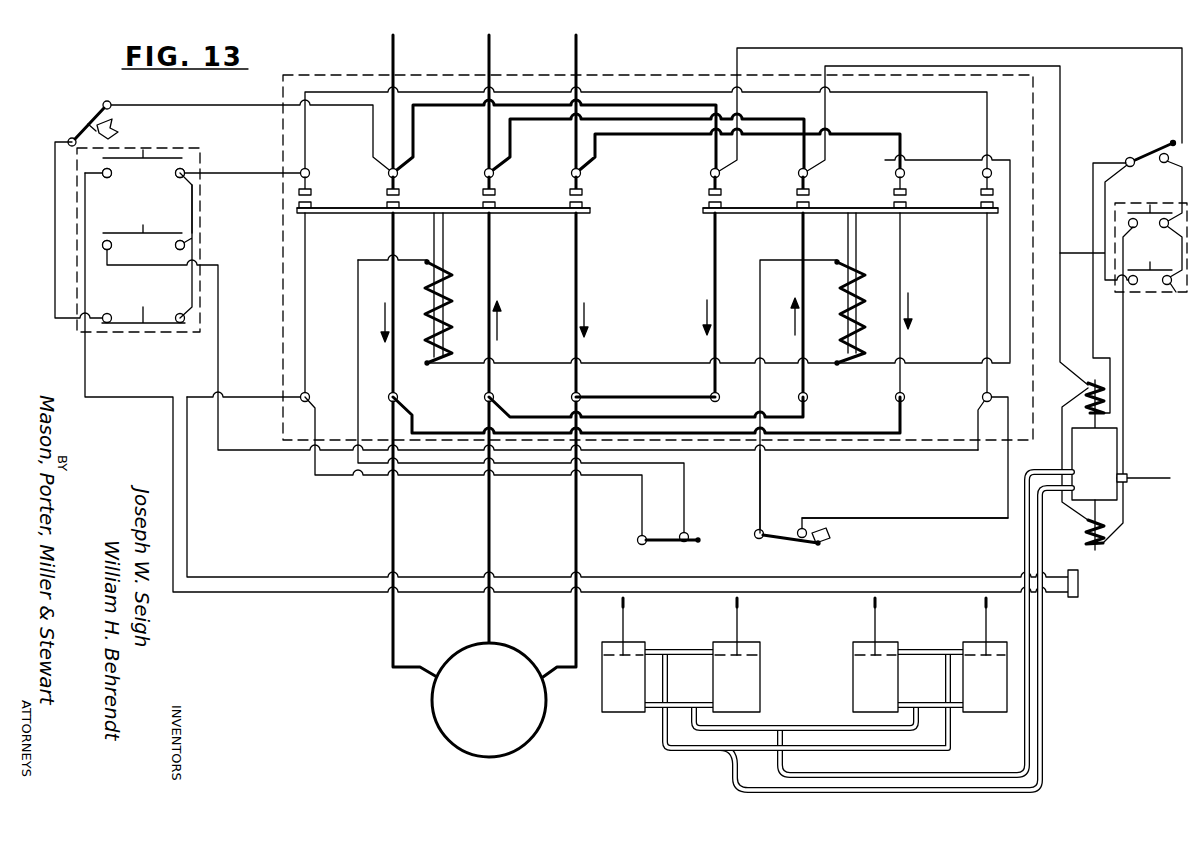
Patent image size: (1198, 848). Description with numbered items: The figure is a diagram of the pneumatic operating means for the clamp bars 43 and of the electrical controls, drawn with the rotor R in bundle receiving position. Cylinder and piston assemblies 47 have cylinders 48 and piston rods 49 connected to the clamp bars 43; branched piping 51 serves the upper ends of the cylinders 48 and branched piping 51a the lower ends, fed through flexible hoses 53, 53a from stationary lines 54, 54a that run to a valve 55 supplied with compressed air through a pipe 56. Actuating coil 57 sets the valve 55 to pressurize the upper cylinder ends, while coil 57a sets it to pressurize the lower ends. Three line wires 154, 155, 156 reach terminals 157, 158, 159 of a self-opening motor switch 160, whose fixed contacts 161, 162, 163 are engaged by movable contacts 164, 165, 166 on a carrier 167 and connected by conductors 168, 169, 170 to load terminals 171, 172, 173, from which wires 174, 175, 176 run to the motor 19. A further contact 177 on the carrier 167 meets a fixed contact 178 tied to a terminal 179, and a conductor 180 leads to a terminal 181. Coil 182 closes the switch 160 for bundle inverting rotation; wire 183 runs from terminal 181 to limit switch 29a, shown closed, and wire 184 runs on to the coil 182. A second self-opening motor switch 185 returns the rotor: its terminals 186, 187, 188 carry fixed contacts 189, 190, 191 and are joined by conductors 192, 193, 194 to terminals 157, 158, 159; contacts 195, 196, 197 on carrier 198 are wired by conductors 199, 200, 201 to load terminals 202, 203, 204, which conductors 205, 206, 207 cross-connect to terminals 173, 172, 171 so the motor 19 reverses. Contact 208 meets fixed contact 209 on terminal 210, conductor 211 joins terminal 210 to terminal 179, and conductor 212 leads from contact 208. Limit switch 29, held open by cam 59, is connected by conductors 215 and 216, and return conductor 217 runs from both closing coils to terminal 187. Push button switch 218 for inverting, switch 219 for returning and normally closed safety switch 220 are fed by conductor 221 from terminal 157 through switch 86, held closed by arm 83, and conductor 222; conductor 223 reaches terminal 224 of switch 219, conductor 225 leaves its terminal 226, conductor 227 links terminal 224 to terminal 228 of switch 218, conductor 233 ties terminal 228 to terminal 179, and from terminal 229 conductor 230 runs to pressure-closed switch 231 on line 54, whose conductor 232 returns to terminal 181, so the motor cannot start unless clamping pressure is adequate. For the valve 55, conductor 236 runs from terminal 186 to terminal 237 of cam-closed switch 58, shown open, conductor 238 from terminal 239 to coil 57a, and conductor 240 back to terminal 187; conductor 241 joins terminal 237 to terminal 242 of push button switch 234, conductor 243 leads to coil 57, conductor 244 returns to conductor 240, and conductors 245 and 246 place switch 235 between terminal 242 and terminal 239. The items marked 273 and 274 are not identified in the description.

The motor 19 is at (489, 700).
The limit switch 29 is at (790, 561).
The limit switch 29a is at (683, 561).
The clamp bars 43 is at (626, 605).
The cylinder and piston assemblies 47 is at (711, 688).
The cylinders 48 is at (804, 677).
The piston rods 49 is at (626, 623).
The branched piping 51 is at (716, 648).
The branched piping 51a is at (655, 715).
The flexible hose 53 is at (728, 774).
The flexible hose 53a is at (782, 762).
The stationary line 54 is at (1046, 736).
The stationary line 54a is at (1034, 766).
The valve 55 is at (1104, 473).
The pipe 56 is at (1143, 476).
The actuating coil 57 is at (1088, 540).
The actuating coil 57a is at (1087, 393).
The cam-closed switch 58 is at (1156, 139).
The cam 59 is at (833, 539).
The arm 83 is at (118, 128).
The switch 86 is at (78, 125).
The line wire 154 is at (395, 60).
The line wire 155 is at (491, 60).
The line wire 156 is at (578, 60).
The terminal 157 is at (400, 172).
The terminal 158 is at (496, 172).
The terminal 159 is at (584, 172).
The motor switch 160 is at (548, 237).
The fixed contact 161 is at (386, 192).
The fixed contact 162 is at (482, 192).
The fixed contact 163 is at (569, 192).
The movable contact 164 is at (400, 205).
The movable contact 165 is at (496, 205).
The movable contact 166 is at (583, 205).
The movable carrier 167 is at (357, 213).
The conductor 168 is at (390, 259).
The conductor 169 is at (492, 282).
The conductor 170 is at (580, 280).
The load terminal 171 is at (399, 395).
The load terminal 172 is at (495, 395).
The load terminal 173 is at (580, 393).
The wire 174 is at (397, 533).
The wire 175 is at (493, 527).
The wire 176 is at (581, 532).
The additional contact 177 is at (298, 206).
The fixed contact 178 is at (298, 192).
The terminal 179 is at (310, 170).
The conductor 180 is at (308, 302).
The terminal 181 is at (310, 395).
The coil 182 is at (454, 268).
The wire 183 is at (358, 479).
The wire 184 is at (356, 352).
The motor switch 185 is at (790, 237).
The terminal 186 is at (722, 174).
The terminal 187 is at (810, 174).
The terminal 188 is at (906, 174).
The fixed contact 189 is at (722, 192).
The fixed contact 190 is at (810, 192).
The fixed contact 191 is at (907, 192).
The conductor 192 is at (664, 104).
The conductor 193 is at (808, 118).
The conductor 194 is at (875, 125).
The contact 195 is at (708, 205).
The contact 196 is at (797, 205).
The contact 197 is at (893, 205).
The movable carrier 198 is at (985, 215).
The conductor 199 is at (714, 287).
The conductor 200 is at (803, 259).
The conductor 201 is at (905, 278).
The load terminal 202 is at (710, 394).
The load terminal 203 is at (810, 397).
The load terminal 204 is at (908, 397).
The conductor 205 is at (668, 395).
The conductor 206 is at (691, 420).
The conductor 207 is at (470, 432).
The additional contact 208 is at (994, 206).
The fixed contact 209 is at (994, 192).
The terminal 210 is at (994, 173).
The conductor 211 is at (308, 138).
The conductor 212 is at (988, 301).
The conductor 215 is at (763, 497).
The conductor 216 is at (964, 515).
The return conductor 217 is at (680, 360).
The control switch 218 is at (155, 181).
The control switch 219 is at (156, 253).
The safety switch 220 is at (155, 345).
The conductor 221 is at (244, 108).
The conductor 222 is at (55, 222).
The conductor 223 is at (193, 292).
The terminal 224 is at (187, 246).
The conductor 225 is at (121, 271).
The terminal 226 is at (103, 247).
The conductor 227 is at (190, 190).
The terminal 228 is at (184, 172).
The terminal 229 is at (112, 184).
The conductor 230 is at (85, 368).
The pressure-closed switch 231 is at (1080, 585).
The conductor 232 is at (190, 535).
The conductor 233 is at (267, 174).
The control switch 234 is at (1163, 245).
The control switch 235 is at (1165, 298).
The conductor 236 is at (891, 52).
The terminal 237 is at (1161, 216).
The conductor 238 is at (1093, 168).
The terminal 239 is at (1128, 159).
The conductor 240 is at (1066, 118).
The conductor 241 is at (1182, 191).
The terminal 242 is at (1170, 240).
The conductor 243 is at (1124, 358).
The conductor 244 is at (1066, 436).
The conductor 245 is at (1173, 298).
The conductor 246 is at (1062, 254).
The contact 273 is at (985, 404).
The coil 274 is at (868, 280).